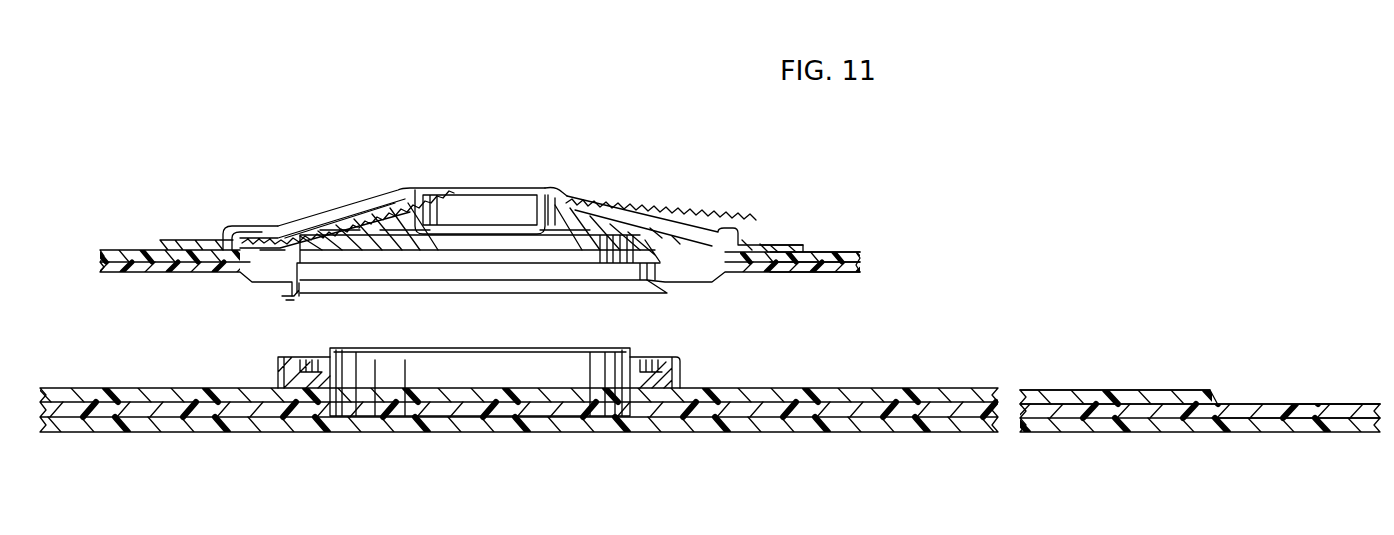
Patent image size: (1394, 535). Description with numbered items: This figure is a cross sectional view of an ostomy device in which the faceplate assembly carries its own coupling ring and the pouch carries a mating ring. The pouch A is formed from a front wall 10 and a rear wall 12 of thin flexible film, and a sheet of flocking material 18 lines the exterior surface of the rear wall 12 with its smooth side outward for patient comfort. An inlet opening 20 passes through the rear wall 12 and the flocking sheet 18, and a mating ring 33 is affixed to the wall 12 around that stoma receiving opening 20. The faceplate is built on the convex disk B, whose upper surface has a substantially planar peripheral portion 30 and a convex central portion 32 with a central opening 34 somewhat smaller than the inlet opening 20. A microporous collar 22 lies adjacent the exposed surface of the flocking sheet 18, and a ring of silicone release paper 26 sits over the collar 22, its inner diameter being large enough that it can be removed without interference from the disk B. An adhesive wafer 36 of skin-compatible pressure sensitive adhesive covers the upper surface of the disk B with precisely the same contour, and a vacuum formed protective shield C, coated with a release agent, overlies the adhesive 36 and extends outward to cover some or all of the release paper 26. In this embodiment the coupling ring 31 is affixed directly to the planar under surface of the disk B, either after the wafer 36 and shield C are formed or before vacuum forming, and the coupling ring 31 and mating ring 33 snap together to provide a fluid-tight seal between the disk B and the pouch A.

The front wall 10 is at (1250, 427).
The rear wall 12 is at (1240, 397).
The flocking material 18 is at (1043, 390).
The pouch A is at (1320, 402).
The inlet opening 20 is at (547, 397).
The microporous collar 22 is at (818, 273).
The silicone release paper 26 is at (840, 251).
The planar peripheral portion 30 is at (272, 250).
The coupling ring 31 is at (296, 295).
The convex central portion 32 is at (596, 233).
The mating ring 33 is at (670, 357).
The central opening 34 is at (557, 190).
The adhesive wafer 36 is at (394, 200).
The convex disk B is at (658, 233).
The protective shield C is at (757, 242).